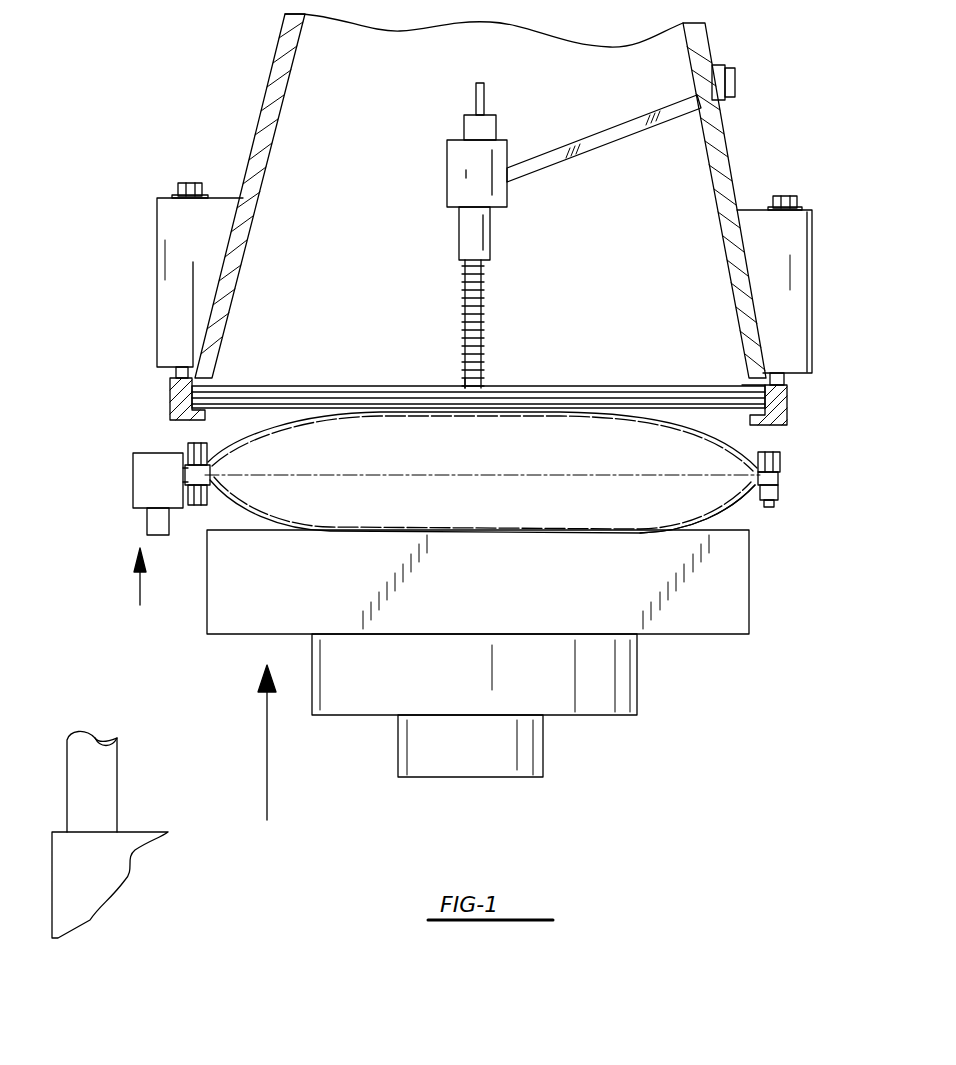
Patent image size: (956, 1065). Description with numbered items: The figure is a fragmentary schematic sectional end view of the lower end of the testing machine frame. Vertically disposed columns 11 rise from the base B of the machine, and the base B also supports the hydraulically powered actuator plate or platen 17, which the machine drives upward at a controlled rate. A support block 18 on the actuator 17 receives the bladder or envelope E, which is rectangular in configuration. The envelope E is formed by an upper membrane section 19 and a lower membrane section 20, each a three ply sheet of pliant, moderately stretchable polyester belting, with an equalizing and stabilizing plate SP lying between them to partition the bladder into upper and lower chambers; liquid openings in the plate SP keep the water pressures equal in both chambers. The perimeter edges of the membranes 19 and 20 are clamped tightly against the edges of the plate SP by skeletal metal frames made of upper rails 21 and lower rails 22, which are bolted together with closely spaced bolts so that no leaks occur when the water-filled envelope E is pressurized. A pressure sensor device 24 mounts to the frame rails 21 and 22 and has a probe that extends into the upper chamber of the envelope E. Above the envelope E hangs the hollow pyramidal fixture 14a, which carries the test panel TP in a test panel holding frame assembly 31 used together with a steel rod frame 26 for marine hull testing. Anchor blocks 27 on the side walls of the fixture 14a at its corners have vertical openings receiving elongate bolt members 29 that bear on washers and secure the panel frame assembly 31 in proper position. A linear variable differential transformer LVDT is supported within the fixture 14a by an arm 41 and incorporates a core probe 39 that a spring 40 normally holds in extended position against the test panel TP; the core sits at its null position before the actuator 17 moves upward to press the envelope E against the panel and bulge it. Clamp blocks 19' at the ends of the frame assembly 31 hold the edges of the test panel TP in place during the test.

The hollow pyramidal fixture 14a is at (730, 160).
The support arm 41 is at (572, 142).
The linear variable differential transformer LVDT is at (565, 232).
The core probe 39 is at (478, 322).
The spring 40 is at (482, 364).
The test panel holding frame assembly 31 is at (162, 388).
The elongate bolt members 29 is at (786, 194).
The anchor blocks 27 is at (775, 250).
The clamp block 19' is at (508, 380).
The test panel TP is at (437, 388).
The steel rod frame 26 is at (752, 385).
The upper membrane section 19 is at (524, 472).
The equalizing and stabilizing plate SP is at (663, 484).
The bladder or envelope E is at (738, 520).
The upper frame rails 21 is at (192, 462).
The lower frame rails 22 is at (203, 505).
The pressure sensor device 24 is at (143, 487).
The lower membrane section 20 is at (745, 500).
The support block 18 is at (227, 627).
The actuator plate or platen 17 is at (640, 690).
The columns 11 is at (108, 775).
The base B is at (127, 880).